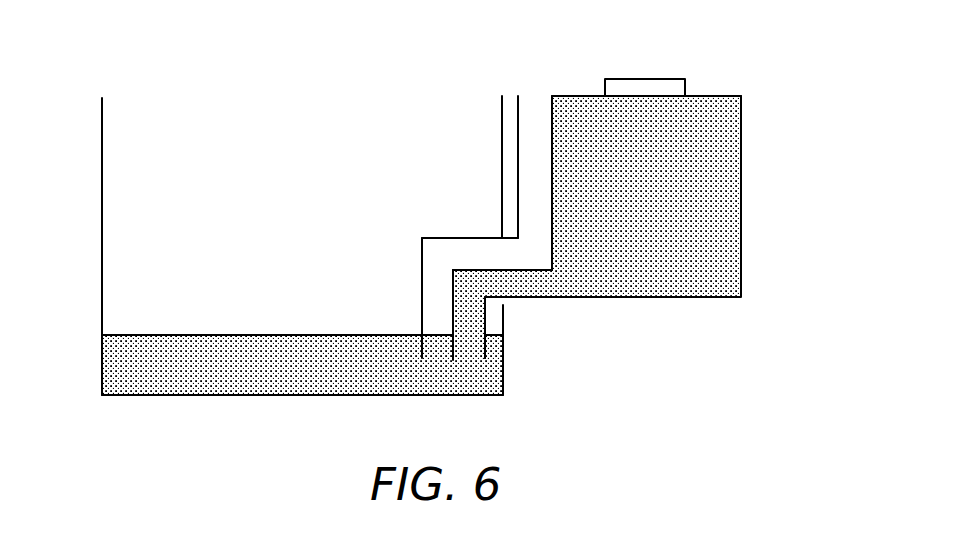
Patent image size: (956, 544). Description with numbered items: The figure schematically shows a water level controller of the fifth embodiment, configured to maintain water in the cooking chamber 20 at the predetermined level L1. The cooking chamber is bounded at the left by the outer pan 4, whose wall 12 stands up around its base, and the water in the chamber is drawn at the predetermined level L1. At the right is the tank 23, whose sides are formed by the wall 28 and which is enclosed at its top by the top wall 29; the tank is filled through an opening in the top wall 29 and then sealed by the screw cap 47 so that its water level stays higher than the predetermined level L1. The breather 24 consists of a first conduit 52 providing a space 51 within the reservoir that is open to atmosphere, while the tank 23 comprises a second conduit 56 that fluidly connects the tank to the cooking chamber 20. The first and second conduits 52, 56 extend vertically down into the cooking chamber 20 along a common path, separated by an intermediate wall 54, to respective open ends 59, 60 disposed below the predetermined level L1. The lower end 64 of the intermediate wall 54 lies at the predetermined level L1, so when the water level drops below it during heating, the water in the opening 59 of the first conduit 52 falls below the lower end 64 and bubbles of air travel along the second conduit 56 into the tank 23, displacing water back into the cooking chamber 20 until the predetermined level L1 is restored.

The outer pan 4 is at (101, 165).
The cooking chamber 20 is at (293, 173).
The predetermined level L1 is at (178, 335).
The wall 12 is at (500, 110).
The first conduit 52 is at (436, 253).
The space 51 is at (440, 294).
The tank 23 is at (741, 203).
The breather 24 is at (556, 113).
The screw cap 47 is at (643, 79).
The top wall 29 is at (719, 96).
The wall 28 is at (555, 222).
The second conduit 56 is at (489, 299).
The intermediate wall 54 is at (523, 273).
The open end 59 is at (435, 318).
The lower end 64 is at (468, 327).
The open end 60 is at (479, 310).